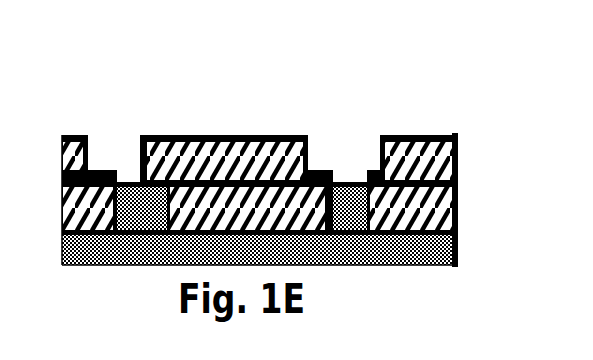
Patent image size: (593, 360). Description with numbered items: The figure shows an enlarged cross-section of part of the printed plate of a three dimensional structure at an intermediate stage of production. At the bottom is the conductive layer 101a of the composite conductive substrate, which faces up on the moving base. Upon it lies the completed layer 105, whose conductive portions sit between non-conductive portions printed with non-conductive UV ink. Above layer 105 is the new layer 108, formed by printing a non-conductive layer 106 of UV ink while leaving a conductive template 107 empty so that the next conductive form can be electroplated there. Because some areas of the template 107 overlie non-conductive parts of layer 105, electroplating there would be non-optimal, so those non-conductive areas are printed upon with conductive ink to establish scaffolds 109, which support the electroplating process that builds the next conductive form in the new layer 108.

The conductive layer 101a is at (455, 264).
The layer 105 is at (459, 217).
The non-conductive layer 106 is at (185, 135).
The conductive template 107 is at (355, 152).
The layer 108 is at (459, 161).
The scaffolds 109 is at (102, 170).